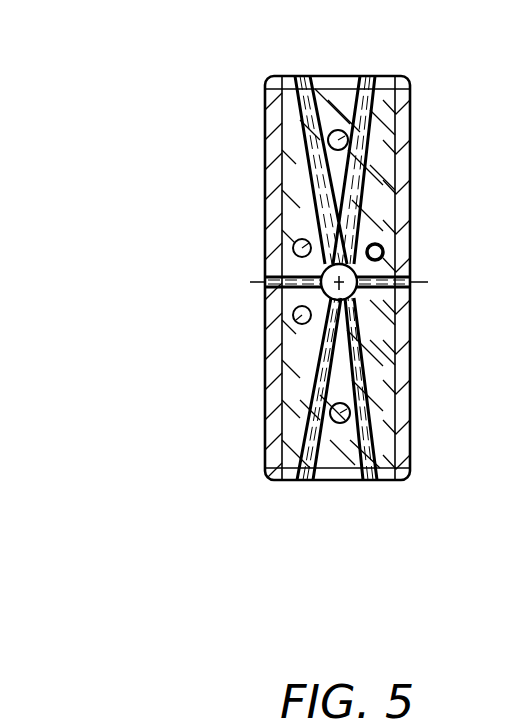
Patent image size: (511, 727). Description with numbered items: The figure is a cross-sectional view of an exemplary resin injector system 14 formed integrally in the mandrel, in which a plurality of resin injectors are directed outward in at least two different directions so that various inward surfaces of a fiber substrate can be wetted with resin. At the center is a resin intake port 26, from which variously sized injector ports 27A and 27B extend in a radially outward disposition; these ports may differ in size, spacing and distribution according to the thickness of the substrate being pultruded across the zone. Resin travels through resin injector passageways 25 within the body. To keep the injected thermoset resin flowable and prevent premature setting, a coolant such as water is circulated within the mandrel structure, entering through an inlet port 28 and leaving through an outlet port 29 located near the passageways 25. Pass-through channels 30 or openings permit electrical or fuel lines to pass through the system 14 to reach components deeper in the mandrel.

The resin injector system 14 is at (238, 101).
The resin injector passageways 25 is at (398, 204).
The resin intake port 26 is at (358, 292).
The resin injector port 27A is at (246, 282).
The resin injector port 27B is at (297, 70).
The inlet port 28 is at (295, 250).
The outlet port 29 is at (300, 325).
The pass-through channels 30 is at (348, 139).